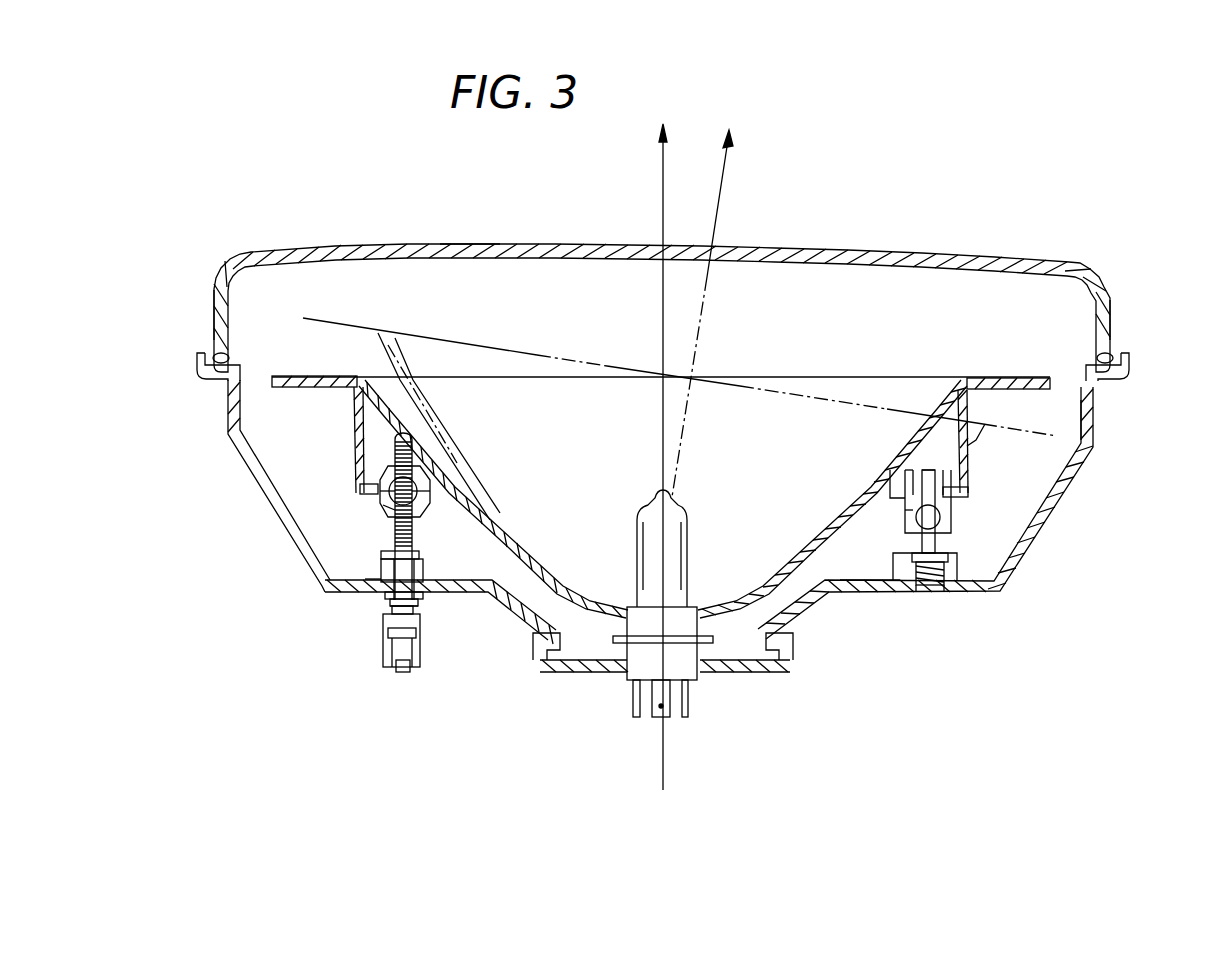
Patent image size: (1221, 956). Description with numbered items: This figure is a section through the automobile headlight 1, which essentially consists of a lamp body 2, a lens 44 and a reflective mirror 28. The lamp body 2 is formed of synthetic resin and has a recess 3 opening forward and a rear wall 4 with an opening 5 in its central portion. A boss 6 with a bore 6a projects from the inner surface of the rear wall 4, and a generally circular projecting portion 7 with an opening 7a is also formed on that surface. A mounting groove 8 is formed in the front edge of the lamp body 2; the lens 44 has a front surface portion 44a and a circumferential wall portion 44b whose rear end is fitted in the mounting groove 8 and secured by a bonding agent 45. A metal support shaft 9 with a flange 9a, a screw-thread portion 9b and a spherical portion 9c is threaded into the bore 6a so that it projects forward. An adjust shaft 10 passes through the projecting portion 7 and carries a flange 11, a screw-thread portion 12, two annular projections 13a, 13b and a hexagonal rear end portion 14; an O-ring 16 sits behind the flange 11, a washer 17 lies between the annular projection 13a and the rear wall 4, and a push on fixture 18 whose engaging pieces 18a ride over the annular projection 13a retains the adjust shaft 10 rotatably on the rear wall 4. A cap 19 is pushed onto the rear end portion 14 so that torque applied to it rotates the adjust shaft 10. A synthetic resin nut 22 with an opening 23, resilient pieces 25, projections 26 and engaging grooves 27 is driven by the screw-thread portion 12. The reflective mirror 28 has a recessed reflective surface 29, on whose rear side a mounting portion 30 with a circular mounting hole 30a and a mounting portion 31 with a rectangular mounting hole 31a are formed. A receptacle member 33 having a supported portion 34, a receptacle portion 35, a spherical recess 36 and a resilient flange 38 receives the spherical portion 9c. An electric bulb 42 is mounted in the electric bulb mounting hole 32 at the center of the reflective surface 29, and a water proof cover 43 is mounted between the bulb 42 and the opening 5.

The automobile headlight 1 is at (1036, 140).
The lamp body 2 is at (990, 594).
The recess 3 is at (1094, 428).
The rear wall 4 is at (862, 586).
The opening 5 is at (775, 676).
The boss 6 is at (896, 572).
The bore 6a is at (924, 588).
The projecting portion 7 is at (424, 560).
The opening 7a is at (420, 580).
The mounting groove 8 is at (203, 358).
The support shaft 9 is at (922, 540).
The flange 9a is at (958, 570).
The screw-thread portion 9b is at (936, 586).
The spherical portion 9c is at (912, 518).
The adjust shaft 10 is at (405, 436).
The flange 11 is at (382, 554).
The screw-thread portion 12 is at (412, 456).
The annular projection 13a is at (414, 608).
The annular projection 13b is at (420, 632).
The rear end portion 14 is at (402, 668).
The O-ring 16 is at (375, 568).
The washer 17 is at (383, 592).
The push on fixture 18 is at (390, 597).
The engaging piece 18a is at (396, 604).
The cap 19 is at (388, 667).
The nut 22 is at (383, 480).
The opening 23 is at (390, 468).
The resilient piece 25 is at (422, 478).
The projection 26 is at (384, 500).
The engaging groove 27 is at (432, 498).
The reflective mirror 28 is at (540, 346).
The reflective surface 29 is at (925, 430).
The mounting portion 30 is at (968, 456).
The mounting hole 30a is at (893, 478).
The mounting portion 31 is at (354, 410).
The mounting hole 31a is at (362, 488).
The electric bulb mounting hole 32 is at (630, 608).
The receptacle member 33 is at (955, 524).
The supported portion 34 is at (902, 476).
The receptacle portion 35 is at (942, 526).
The spherical recess 36 is at (912, 515).
The resilient flange 38 is at (968, 496).
The electric bulb 42 is at (683, 507).
The water proof cover 43 is at (575, 676).
The lens 44 is at (570, 247).
The front surface portion 44a is at (470, 246).
The circumferential wall portion 44b is at (214, 300).
The bonding agent 45 is at (222, 352).